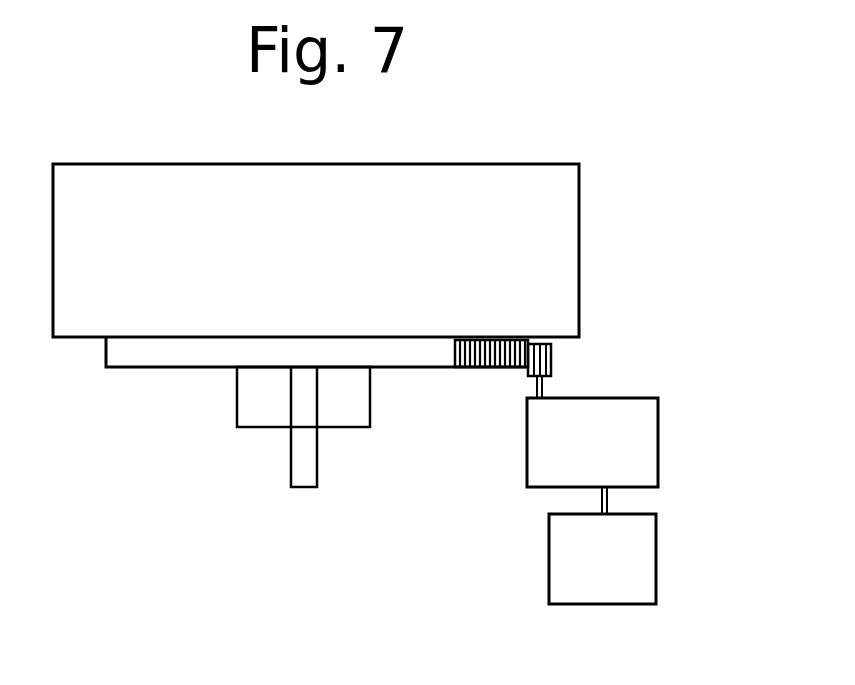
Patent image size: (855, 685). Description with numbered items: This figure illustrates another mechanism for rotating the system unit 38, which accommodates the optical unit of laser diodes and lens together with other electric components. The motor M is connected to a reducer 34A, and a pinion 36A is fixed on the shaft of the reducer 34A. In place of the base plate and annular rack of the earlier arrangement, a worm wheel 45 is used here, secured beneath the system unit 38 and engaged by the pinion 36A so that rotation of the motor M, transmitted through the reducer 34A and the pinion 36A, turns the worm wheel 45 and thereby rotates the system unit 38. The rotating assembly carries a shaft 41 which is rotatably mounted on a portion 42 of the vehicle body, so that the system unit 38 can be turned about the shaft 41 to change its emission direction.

The system unit 38 is at (477, 164).
The worm wheel 45 is at (402, 358).
The pinion 36A is at (551, 362).
The reducer 34A is at (627, 398).
The motor M is at (658, 530).
The portion of the vehicle body 42 is at (246, 404).
The shaft 41 is at (295, 465).